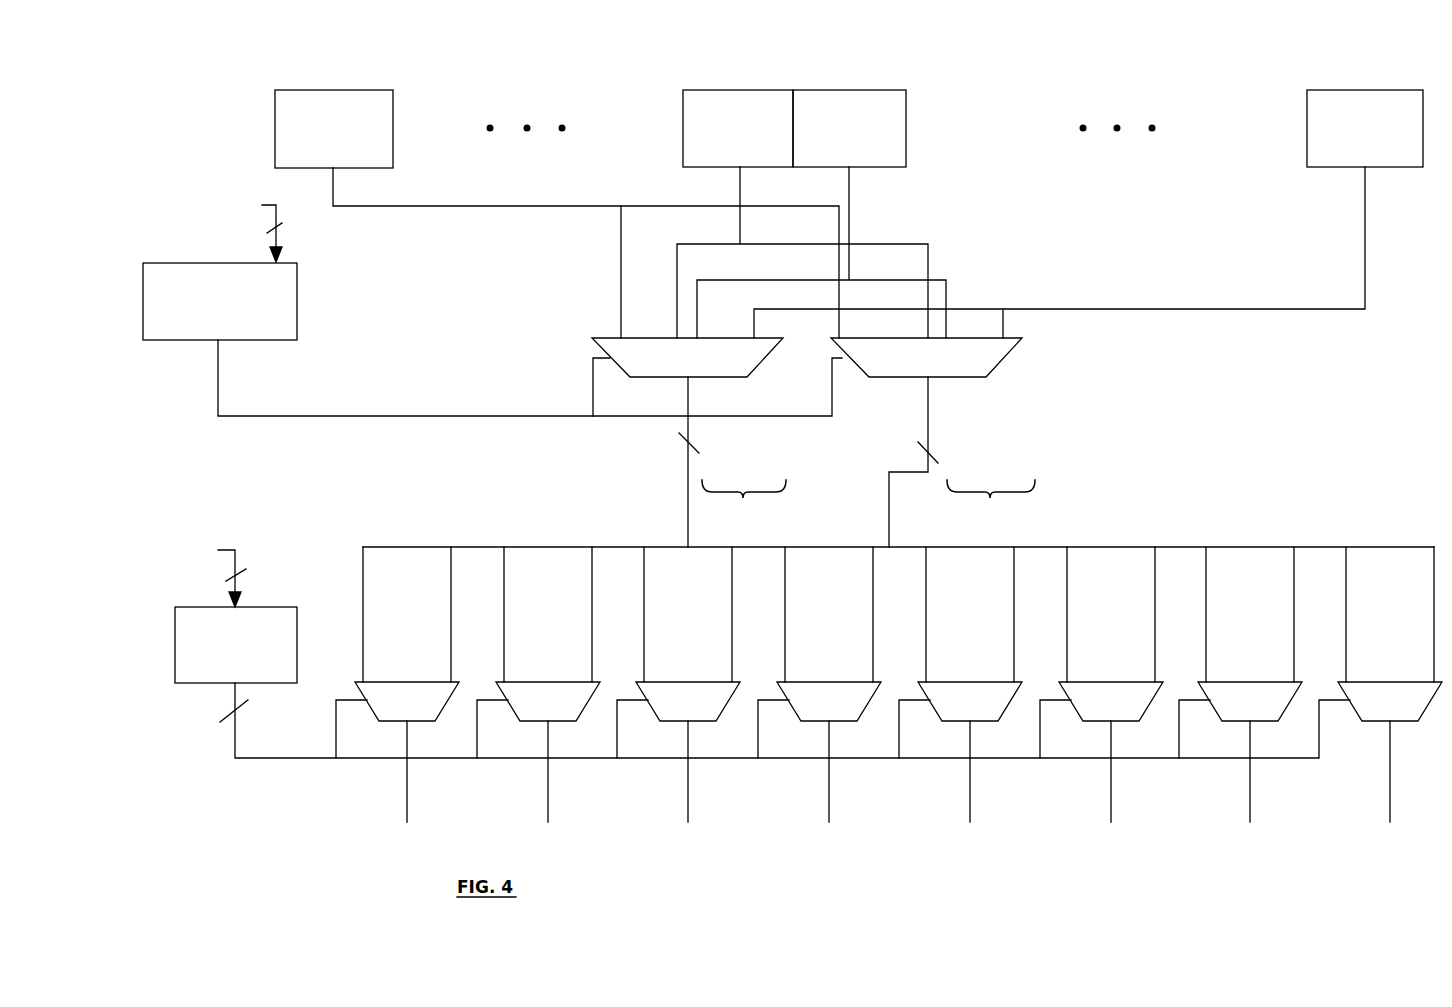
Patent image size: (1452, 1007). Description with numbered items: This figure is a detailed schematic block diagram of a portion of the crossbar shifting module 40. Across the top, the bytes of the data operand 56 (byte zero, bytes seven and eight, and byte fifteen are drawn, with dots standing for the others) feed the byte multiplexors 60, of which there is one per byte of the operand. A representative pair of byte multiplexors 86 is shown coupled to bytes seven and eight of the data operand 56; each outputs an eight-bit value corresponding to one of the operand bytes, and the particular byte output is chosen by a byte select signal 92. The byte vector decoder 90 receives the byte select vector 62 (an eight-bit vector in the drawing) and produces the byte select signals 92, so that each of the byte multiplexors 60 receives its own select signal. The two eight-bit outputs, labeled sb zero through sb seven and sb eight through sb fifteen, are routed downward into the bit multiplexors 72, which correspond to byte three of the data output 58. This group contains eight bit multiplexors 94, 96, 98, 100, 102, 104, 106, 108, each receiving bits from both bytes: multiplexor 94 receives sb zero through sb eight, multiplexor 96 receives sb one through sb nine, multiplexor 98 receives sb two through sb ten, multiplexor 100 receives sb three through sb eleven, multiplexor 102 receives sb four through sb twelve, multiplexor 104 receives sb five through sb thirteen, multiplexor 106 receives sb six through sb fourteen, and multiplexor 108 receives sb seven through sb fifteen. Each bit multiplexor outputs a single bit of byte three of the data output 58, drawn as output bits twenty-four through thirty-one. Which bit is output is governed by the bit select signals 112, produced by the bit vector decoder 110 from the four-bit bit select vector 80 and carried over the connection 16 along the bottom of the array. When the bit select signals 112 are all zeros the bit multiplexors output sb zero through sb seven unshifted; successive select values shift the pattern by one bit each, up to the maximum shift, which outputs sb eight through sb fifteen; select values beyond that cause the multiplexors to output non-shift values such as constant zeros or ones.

The crossbar shifting module 40 is at (1084, 897).
The data operand 56 is at (795, 129).
The byte select vector 62 is at (242, 222).
The byte vector decoder 90 is at (220, 301).
The byte multiplexors 60 is at (849, 357).
The byte multiplexor 86 is at (590, 338).
The byte select signals 92 is at (530, 378).
The bit select vector 80 is at (199, 565).
The bit vector decoder 110 is at (236, 645).
The bit select signals 112 is at (765, 732).
The 16 bit select signal lines 16 is at (217, 715).
The bit multiplexors 72 is at (847, 612).
The bit multiplexor 94 is at (407, 701).
The bit multiplexor 96 is at (548, 701).
The bit multiplexor 98 is at (688, 701).
The bit multiplexor 100 is at (829, 701).
The bit multiplexor 102 is at (970, 701).
The bit multiplexor 104 is at (1111, 701).
The bit multiplexor 106 is at (1250, 701).
The bit multiplexor 108 is at (1390, 701).
The data output 58 is at (773, 784).